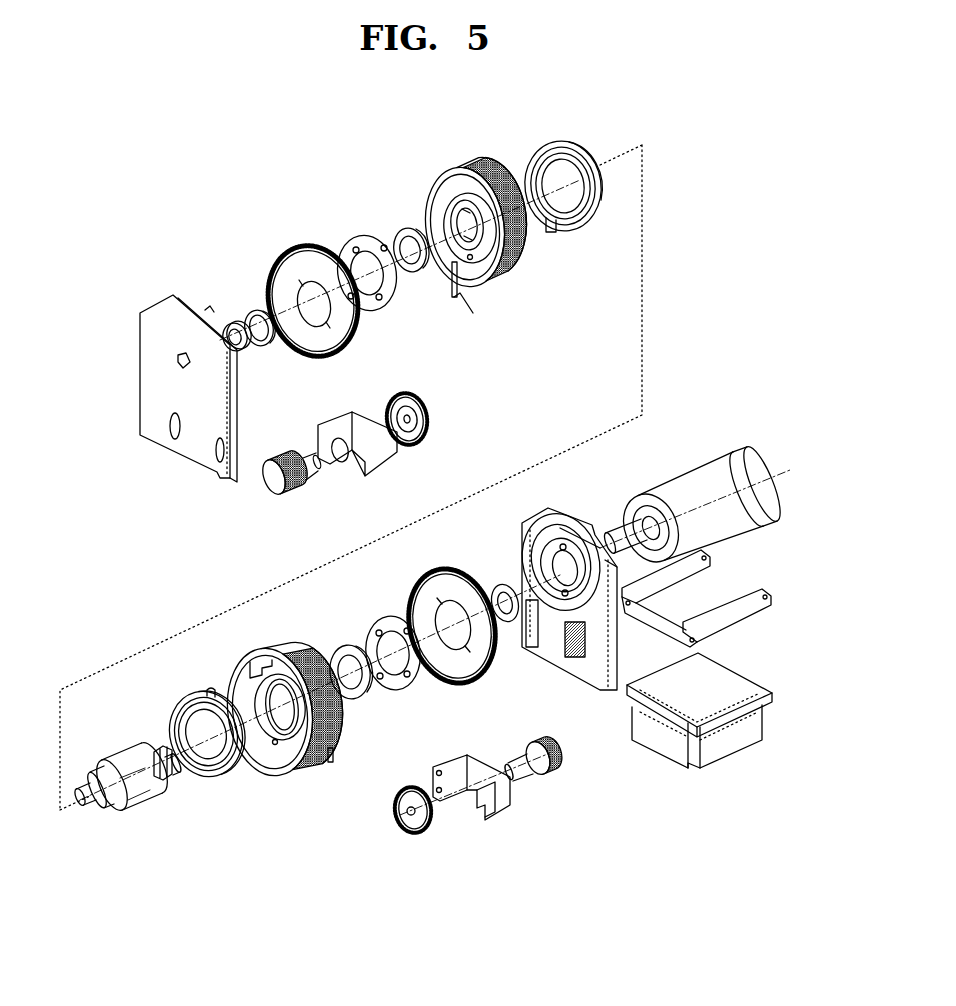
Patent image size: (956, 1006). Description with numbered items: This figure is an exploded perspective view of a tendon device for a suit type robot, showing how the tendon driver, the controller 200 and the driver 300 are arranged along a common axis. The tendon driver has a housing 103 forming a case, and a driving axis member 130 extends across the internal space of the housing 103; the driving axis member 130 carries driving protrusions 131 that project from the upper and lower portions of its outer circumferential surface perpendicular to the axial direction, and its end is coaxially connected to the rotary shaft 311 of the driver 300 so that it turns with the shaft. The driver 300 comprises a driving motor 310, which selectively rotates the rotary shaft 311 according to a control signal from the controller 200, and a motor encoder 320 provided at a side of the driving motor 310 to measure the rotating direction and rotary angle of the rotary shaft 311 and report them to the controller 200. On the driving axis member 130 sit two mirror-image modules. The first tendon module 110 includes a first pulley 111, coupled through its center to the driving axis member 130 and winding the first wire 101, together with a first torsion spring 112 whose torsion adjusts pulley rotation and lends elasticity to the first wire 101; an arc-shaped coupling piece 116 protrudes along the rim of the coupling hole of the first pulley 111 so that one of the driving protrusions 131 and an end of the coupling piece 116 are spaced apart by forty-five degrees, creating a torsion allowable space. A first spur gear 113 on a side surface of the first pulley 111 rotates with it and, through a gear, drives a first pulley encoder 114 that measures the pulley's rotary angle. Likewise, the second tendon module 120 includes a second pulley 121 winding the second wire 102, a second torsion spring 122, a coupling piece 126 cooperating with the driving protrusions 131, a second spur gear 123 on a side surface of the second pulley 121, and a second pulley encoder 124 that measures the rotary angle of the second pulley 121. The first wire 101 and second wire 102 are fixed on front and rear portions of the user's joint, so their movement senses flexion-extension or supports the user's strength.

The first wire 101 is at (333, 752).
The second wire 102 is at (473, 313).
The housing 103 is at (140, 387).
The first tendon module 110 is at (467, 912).
The first pulley 111 is at (283, 774).
The first torsion spring 112 is at (212, 785).
The first spur gear 113 is at (453, 662).
The first pulley encoder 114 is at (545, 786).
The coupling piece 116 is at (240, 682).
The second tendon module 120 is at (190, 152).
The second pulley 121 is at (451, 247).
The second torsion spring 122 is at (532, 156).
The second spur gear 123 is at (260, 312).
The second pulley encoder 124 is at (268, 460).
The coupling piece 126 is at (518, 266).
The driving axis member 130 is at (143, 790).
The driving protrusions 131 is at (84, 802).
The controller 200 is at (720, 747).
The driver 300 is at (797, 397).
The driving motor 310 is at (737, 462).
The rotary shaft 311 is at (617, 533).
The motor encoder 320 is at (779, 463).